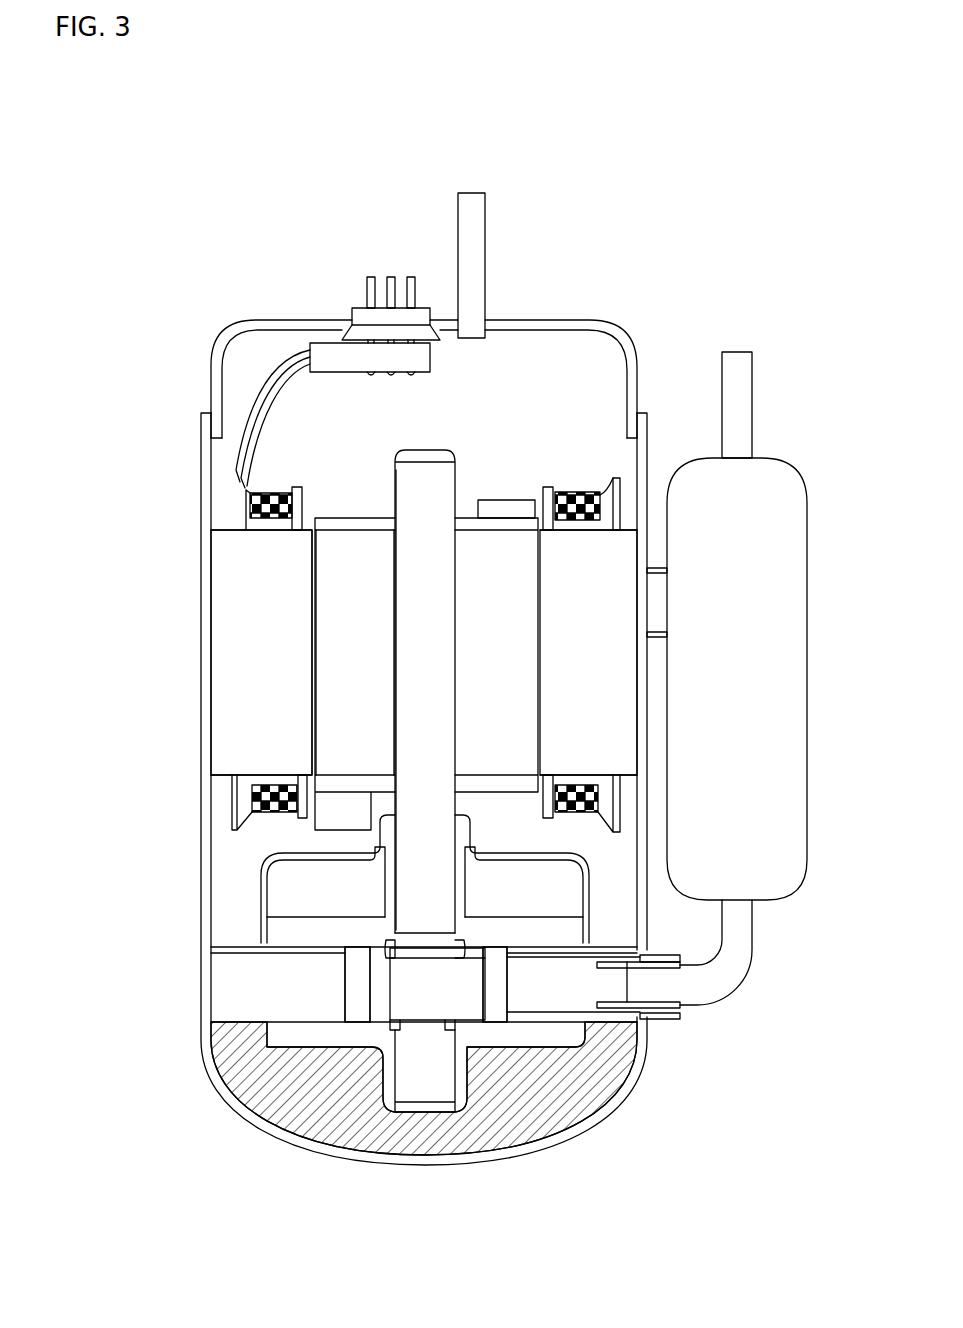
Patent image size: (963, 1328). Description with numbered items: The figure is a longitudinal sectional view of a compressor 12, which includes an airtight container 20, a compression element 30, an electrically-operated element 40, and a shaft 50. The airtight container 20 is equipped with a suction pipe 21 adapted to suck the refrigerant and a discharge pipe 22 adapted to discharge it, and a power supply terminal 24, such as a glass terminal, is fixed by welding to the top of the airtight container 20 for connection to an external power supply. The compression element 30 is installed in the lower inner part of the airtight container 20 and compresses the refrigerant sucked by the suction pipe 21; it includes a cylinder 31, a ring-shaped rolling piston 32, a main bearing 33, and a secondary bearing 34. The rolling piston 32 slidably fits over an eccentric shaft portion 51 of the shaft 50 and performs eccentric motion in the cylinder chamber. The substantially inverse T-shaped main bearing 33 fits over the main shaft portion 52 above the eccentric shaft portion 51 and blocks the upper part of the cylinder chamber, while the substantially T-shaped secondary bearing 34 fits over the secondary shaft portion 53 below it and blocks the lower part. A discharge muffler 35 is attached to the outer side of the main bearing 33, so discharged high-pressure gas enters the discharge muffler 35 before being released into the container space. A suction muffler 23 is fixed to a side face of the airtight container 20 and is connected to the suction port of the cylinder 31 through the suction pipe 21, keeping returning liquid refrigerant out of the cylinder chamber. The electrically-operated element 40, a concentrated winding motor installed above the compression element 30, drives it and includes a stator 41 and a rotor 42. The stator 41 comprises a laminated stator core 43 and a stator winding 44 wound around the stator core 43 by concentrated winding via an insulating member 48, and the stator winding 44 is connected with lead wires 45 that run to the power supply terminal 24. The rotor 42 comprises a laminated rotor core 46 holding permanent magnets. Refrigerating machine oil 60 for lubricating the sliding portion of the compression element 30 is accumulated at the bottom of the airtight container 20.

The compressor 12 is at (678, 259).
The airtight container 20 is at (256, 320).
The suction pipe 21 is at (722, 990).
The discharge pipe 22 is at (487, 193).
The suction muffler 23 is at (773, 458).
The power supply terminal 24 is at (360, 310).
The compression element 30 is at (120, 815).
The cylinder 31 is at (225, 995).
The rolling piston 32 is at (493, 1020).
The main bearing 33 is at (272, 925).
The secondary bearing 34 is at (337, 1040).
The discharge muffler 35 is at (262, 866).
The electrically-operated element 40 is at (98, 475).
The stator 41 is at (210, 594).
The rotor 42 is at (315, 660).
The stator core 43 is at (223, 560).
The stator winding 44 is at (247, 510).
The lead wires 45 is at (260, 384).
The rotor core 46 is at (330, 707).
The insulating member 48 is at (240, 478).
The shaft 50 is at (432, 447).
The eccentric shaft portion 51 is at (420, 1008).
The main shaft portion 52 is at (445, 492).
The secondary shaft portion 53 is at (418, 1093).
The refrigerating machine oil 60 is at (645, 1082).